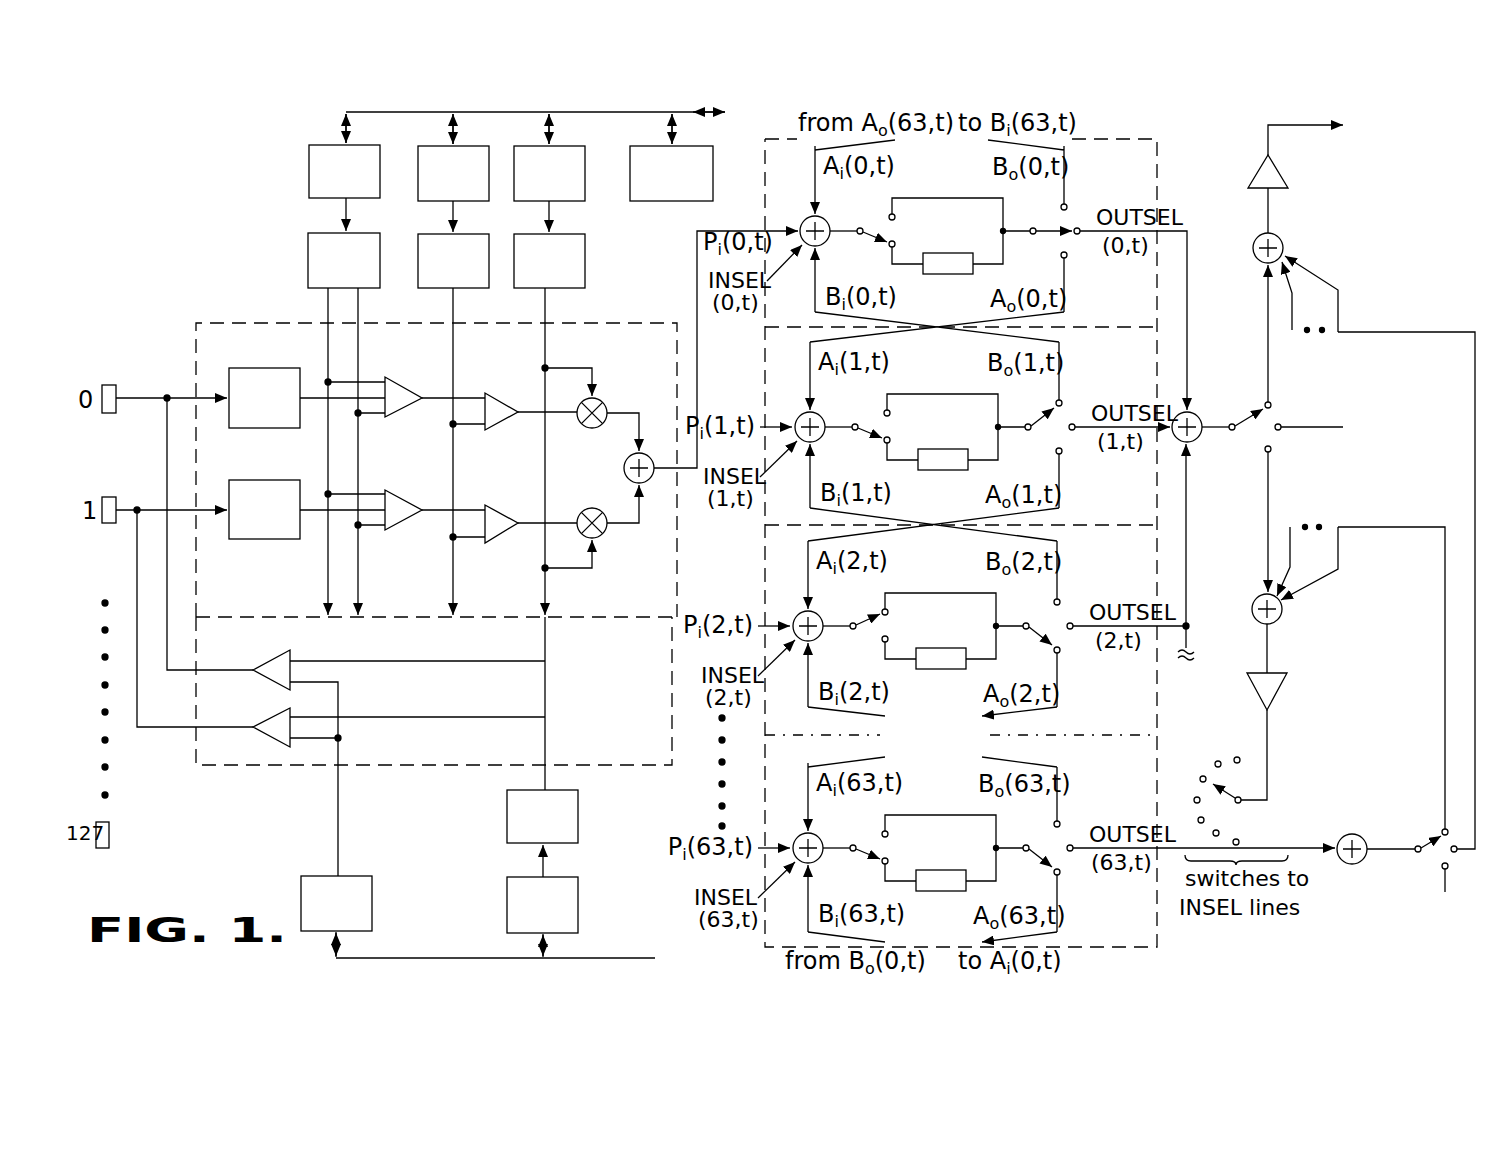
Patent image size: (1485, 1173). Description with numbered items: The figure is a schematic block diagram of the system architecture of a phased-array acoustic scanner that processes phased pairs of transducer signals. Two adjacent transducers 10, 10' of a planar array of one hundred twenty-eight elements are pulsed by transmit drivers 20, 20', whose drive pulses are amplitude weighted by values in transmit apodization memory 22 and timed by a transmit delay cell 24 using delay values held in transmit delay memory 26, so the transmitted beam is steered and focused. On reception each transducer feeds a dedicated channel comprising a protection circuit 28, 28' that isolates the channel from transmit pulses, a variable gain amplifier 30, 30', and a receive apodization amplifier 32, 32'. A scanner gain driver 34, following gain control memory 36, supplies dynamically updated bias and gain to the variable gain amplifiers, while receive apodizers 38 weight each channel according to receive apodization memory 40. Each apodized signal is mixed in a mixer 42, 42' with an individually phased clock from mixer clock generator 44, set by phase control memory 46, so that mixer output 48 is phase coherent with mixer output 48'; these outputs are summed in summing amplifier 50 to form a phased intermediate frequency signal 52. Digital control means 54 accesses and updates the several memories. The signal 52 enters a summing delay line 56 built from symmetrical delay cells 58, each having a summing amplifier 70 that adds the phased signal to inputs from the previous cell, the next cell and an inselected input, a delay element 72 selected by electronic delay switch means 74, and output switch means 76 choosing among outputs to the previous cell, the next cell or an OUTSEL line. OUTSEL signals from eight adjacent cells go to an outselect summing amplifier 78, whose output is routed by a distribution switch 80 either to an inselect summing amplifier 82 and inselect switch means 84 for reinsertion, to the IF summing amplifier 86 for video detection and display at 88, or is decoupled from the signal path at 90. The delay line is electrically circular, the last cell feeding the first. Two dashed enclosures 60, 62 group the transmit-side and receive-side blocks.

The transducer 10 is at (126, 376).
The transducer 10' is at (130, 488).
The transmit driver 20 is at (264, 656).
The transmit driver 20' is at (253, 713).
The transmit apodization memory 22 is at (322, 920).
The transmit delay cell 24 is at (528, 833).
The transmit delay memory 26 is at (528, 921).
The protection circuit 28 is at (264, 398).
The protection circuit 28' is at (264, 509).
The variable gain amplifier 30 is at (405, 376).
The variable gain amplifier 30' is at (408, 489).
The receive apodization amplifier 32 is at (505, 391).
The receive apodization amplifier 32' is at (505, 501).
The scanner gain driver 34 is at (330, 277).
The gain control memory 36 is at (330, 188).
The receive apodizer 38 is at (439, 277).
The receive apodization memory 40 is at (439, 190).
The mixer 42 is at (582, 428).
The mixer 42' is at (579, 504).
The mixer clock generator 44 is at (535, 277).
The phase control memory 46 is at (535, 190).
The mixer output 48 is at (627, 406).
The mixer output 48' is at (629, 528).
The summing amplifier 50 is at (652, 452).
The phased intermediate frequency signal 52 is at (696, 248).
The digital control means 54 is at (658, 190).
The summing delay line 56 is at (1156, 949).
The delay cell 58 is at (767, 152).
The output section 60 is at (604, 766).
The input section 62 is at (601, 323).
The summing amplifier 70 is at (807, 220).
The delay element 72 is at (955, 275).
The electronic delay switch means 74 is at (896, 226).
The electronic delay cell output switch means 76 is at (1053, 224).
The outselect summing amplifier 78 is at (1197, 417).
The electronic distribution switch 80 is at (1270, 418).
The inselect summing amplifier 82 is at (1281, 690).
The inselect switch means 84 is at (1230, 812).
The IF summing amplifier 86 is at (1286, 172).
The video detection means 88 is at (1326, 133).
The decoupling point 90 is at (1372, 673).